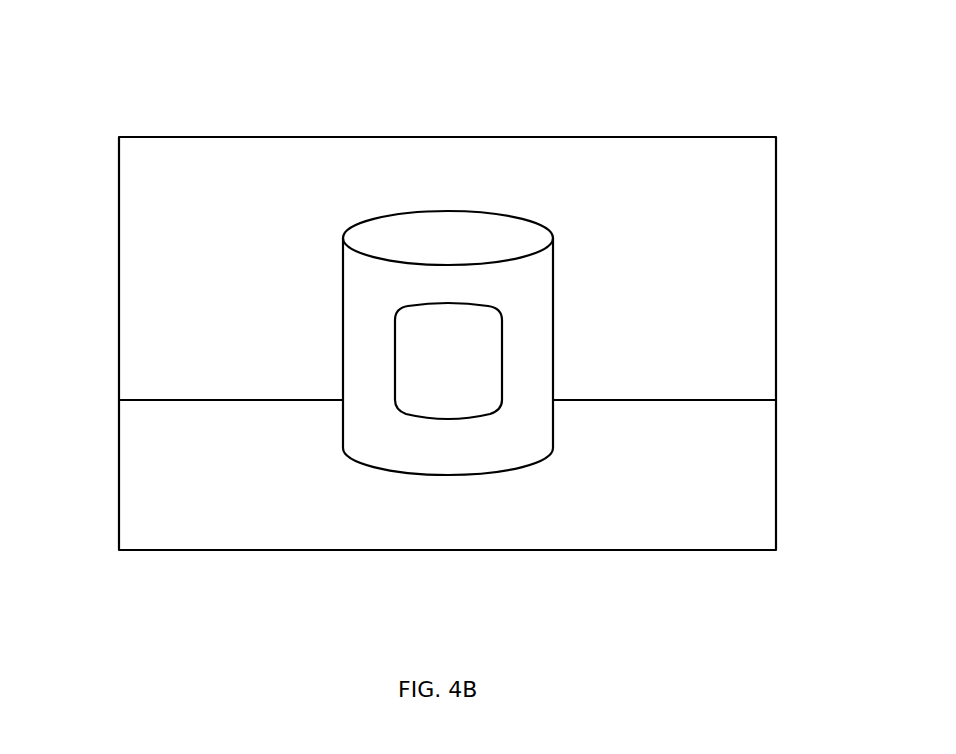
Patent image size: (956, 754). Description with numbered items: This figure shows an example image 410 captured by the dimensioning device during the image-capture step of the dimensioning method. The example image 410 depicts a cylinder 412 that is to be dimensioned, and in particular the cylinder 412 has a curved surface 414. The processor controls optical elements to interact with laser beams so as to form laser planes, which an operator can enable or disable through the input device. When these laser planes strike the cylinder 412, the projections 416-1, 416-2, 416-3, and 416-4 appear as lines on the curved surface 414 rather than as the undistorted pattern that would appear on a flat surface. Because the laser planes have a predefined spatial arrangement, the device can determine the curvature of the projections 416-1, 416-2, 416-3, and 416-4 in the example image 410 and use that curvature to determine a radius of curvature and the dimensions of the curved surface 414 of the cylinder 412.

The example image 410 is at (175, 137).
The cylinder 412 is at (553, 332).
The curved surface 414 is at (492, 277).
The projection 416-1 is at (410, 310).
The projection 416-2 is at (502, 380).
The projection 416-3 is at (433, 420).
The projection 416-4 is at (395, 362).